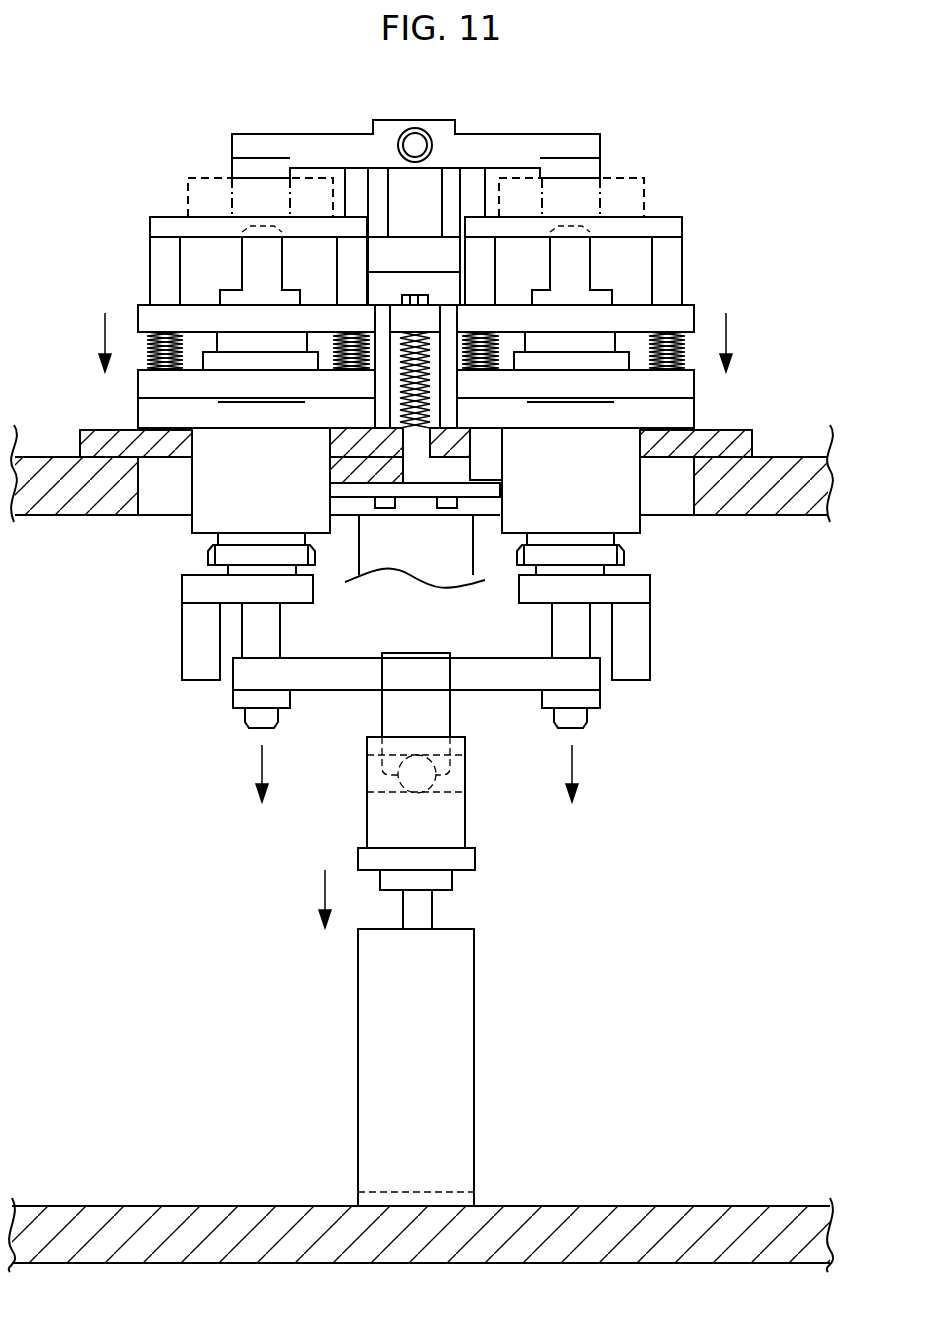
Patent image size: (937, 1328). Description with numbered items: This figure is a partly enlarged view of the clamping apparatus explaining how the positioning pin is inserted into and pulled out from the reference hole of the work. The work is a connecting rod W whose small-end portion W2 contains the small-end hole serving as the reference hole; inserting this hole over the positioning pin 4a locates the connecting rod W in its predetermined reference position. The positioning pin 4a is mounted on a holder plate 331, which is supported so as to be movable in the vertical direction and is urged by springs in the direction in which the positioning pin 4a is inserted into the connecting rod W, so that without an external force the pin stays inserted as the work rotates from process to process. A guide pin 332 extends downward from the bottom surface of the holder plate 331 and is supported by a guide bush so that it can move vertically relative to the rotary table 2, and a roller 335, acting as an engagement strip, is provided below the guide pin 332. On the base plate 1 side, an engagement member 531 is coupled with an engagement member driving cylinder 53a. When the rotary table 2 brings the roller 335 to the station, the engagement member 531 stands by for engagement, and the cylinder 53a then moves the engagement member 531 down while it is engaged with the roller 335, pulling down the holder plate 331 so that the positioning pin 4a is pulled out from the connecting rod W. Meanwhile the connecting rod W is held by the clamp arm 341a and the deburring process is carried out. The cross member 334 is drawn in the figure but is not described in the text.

The clamp arm 341a is at (315, 134).
The connecting rod W is at (208, 178).
The small-end portion W2 is at (598, 197).
The positioning pin 4a is at (242, 267).
The holder plate 331 is at (698, 313).
The rotary table 2 is at (63, 515).
The cross bar 334 is at (483, 683).
The guide pin 332 is at (582, 731).
The roller 335 is at (398, 775).
The engagement member 531 is at (458, 822).
The engagement member driving cylinder 53a is at (464, 1052).
The base plate 1 is at (692, 1206).